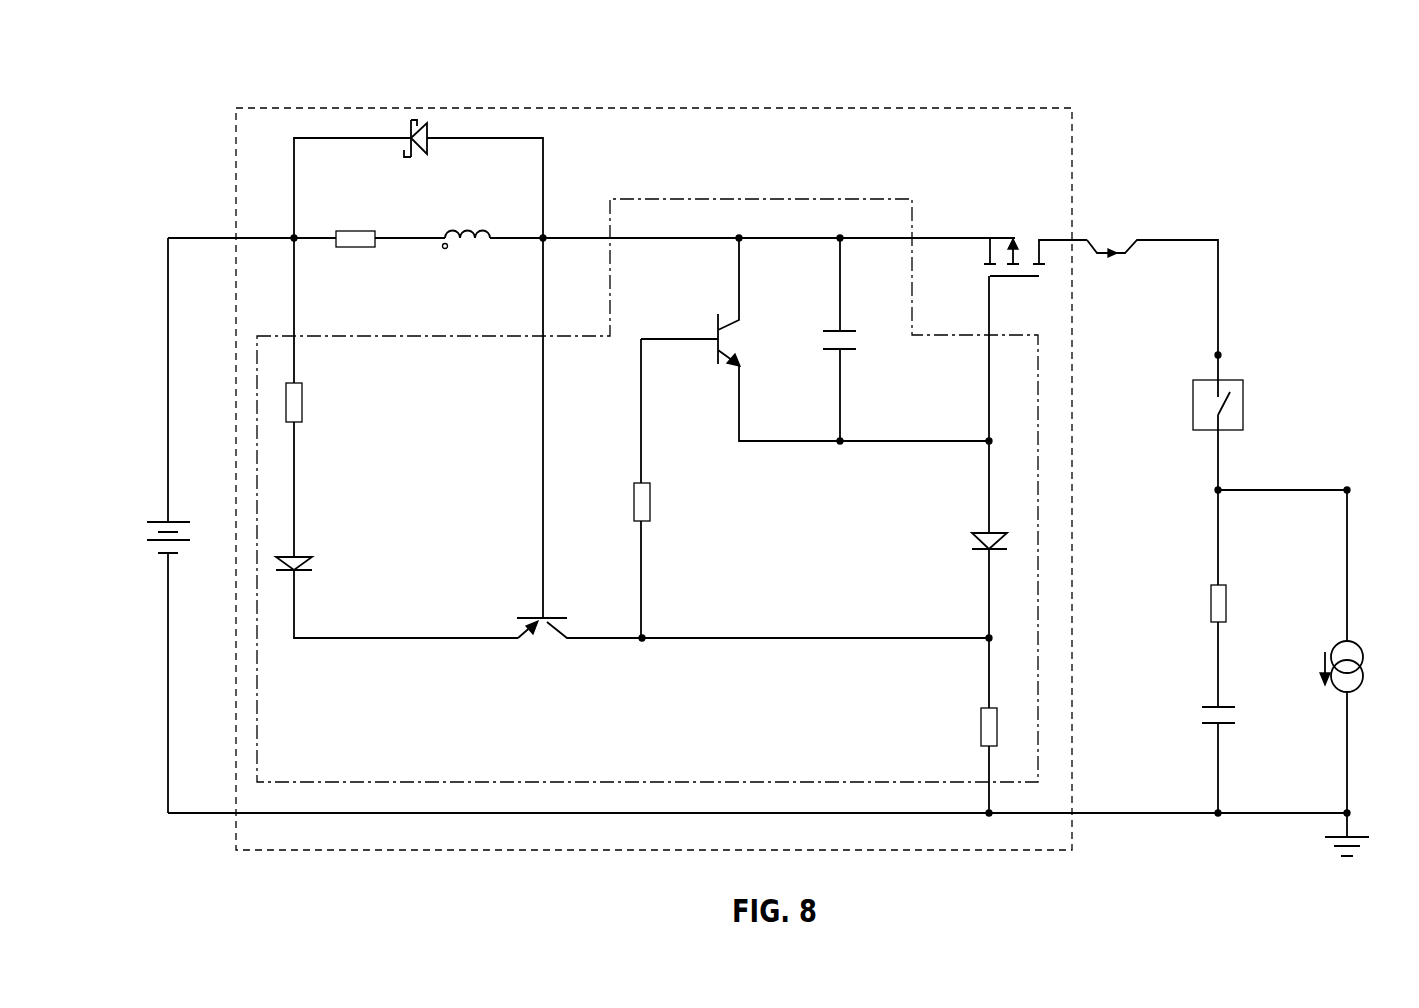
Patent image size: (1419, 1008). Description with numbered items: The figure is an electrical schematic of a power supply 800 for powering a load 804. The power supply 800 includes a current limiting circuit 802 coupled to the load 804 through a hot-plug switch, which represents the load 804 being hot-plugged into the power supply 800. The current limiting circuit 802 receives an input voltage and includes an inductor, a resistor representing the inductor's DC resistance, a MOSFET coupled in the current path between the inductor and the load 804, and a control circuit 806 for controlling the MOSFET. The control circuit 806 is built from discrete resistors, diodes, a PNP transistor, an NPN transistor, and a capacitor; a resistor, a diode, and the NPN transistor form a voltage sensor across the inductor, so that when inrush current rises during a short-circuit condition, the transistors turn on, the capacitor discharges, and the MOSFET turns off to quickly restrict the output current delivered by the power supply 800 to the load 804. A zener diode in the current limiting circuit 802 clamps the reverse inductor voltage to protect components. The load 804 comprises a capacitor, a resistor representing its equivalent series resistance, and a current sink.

The power supply 800 is at (224, 40).
The current limiting circuit 802 is at (307, 108).
The load 804 is at (1296, 461).
The control circuit 806 is at (735, 199).